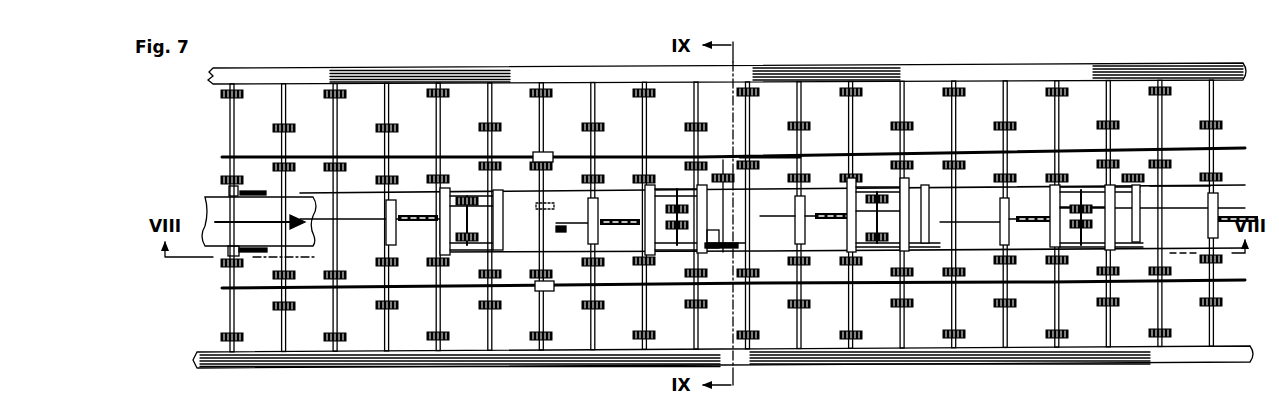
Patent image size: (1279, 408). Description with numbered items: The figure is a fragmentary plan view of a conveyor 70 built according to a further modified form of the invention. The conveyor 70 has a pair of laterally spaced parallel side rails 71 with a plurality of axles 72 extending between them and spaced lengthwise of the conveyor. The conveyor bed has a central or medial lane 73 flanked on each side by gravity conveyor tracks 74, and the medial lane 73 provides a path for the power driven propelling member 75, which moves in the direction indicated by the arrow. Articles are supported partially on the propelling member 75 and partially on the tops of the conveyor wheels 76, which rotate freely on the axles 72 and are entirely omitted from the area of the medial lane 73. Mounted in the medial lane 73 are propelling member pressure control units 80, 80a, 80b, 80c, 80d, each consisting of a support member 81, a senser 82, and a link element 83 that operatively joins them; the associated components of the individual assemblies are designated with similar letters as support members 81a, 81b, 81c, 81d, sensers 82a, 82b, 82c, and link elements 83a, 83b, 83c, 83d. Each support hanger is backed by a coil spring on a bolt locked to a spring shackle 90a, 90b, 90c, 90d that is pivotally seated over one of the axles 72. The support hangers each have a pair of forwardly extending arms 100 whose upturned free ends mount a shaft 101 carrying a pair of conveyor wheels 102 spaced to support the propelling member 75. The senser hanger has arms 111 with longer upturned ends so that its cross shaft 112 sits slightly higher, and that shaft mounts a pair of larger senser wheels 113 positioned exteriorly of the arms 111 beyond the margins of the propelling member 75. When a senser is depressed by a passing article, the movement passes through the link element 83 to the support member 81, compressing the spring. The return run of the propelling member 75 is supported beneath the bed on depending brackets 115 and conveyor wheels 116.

The conveyor 70 is at (786, 66).
The side rails 71 is at (845, 68).
The axles 72 is at (228, 318).
The medial lane 73 is at (218, 186).
The gravity conveyor tracks 74 is at (228, 122).
The propelling member 75 is at (212, 206).
The conveyor wheels 76 is at (291, 128).
The propelling member pressure control unit 80 is at (373, 218).
The pressure control unit 80a is at (564, 229).
The pressure control unit 80b is at (788, 214).
The pressure control unit 80c is at (1019, 216).
The pressure control unit 80d is at (1193, 215).
The support member 81 is at (228, 251).
The support member 81a is at (442, 244).
The support member 81b is at (645, 244).
The support member 81c is at (872, 215).
The support member 81d is at (1070, 190).
The senser 82 is at (508, 181).
The senser 82a is at (720, 176).
The senser 82b is at (917, 175).
The senser 82c is at (1133, 175).
The link element 83 is at (362, 190).
The link element 83a is at (553, 250).
The link element 83b is at (772, 158).
The link element 83c is at (962, 223).
The link element 83d is at (1180, 188).
The spring shackle 90a is at (388, 227).
The spring shackle 90b is at (598, 205).
The spring shackle 90c is at (804, 200).
The spring shackle 90d is at (1007, 200).
The arms 100 is at (462, 192).
The shaft 101 is at (452, 221).
The conveyor wheels 102 is at (452, 200).
The arms 111 is at (709, 246).
The cross shaft 112 is at (713, 248).
The senser wheels 113 is at (729, 266).
The depending brackets 115 is at (548, 152).
The conveyor wheels 116 is at (548, 203).